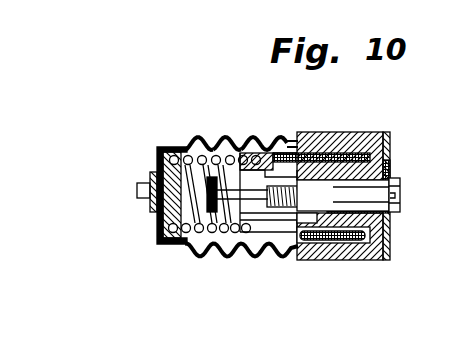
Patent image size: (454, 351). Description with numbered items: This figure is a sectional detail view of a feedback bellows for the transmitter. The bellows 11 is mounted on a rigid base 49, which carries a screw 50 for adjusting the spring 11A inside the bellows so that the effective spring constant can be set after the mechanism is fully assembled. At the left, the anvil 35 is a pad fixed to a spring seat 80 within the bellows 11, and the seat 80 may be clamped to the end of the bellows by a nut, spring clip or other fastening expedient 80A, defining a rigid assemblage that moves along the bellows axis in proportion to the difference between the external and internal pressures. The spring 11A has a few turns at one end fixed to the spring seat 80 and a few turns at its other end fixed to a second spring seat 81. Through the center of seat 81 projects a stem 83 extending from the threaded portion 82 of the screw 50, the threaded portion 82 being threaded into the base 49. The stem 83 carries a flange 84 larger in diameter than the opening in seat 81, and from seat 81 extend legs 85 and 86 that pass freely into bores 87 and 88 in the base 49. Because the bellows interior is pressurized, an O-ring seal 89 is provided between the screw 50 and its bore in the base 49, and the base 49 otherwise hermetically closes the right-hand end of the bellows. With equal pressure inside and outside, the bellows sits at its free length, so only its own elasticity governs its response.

The anvil 35 is at (142, 210).
The spring seat 80 is at (157, 224).
The fastening expedient 80A is at (156, 172).
The flange 84 is at (188, 243).
The spring 11A is at (186, 140).
The bellows 11 is at (232, 140).
The spring seat 81 is at (252, 146).
The threaded portion 82 is at (270, 257).
The stem 83 is at (257, 232).
The leg 86 is at (344, 132).
The O-ring seal 89 is at (356, 165).
The leg 85 is at (322, 260).
The bore 87 is at (388, 217).
The rigid base 49 is at (387, 133).
The bore 88 is at (389, 168).
The screw 50 is at (398, 180).